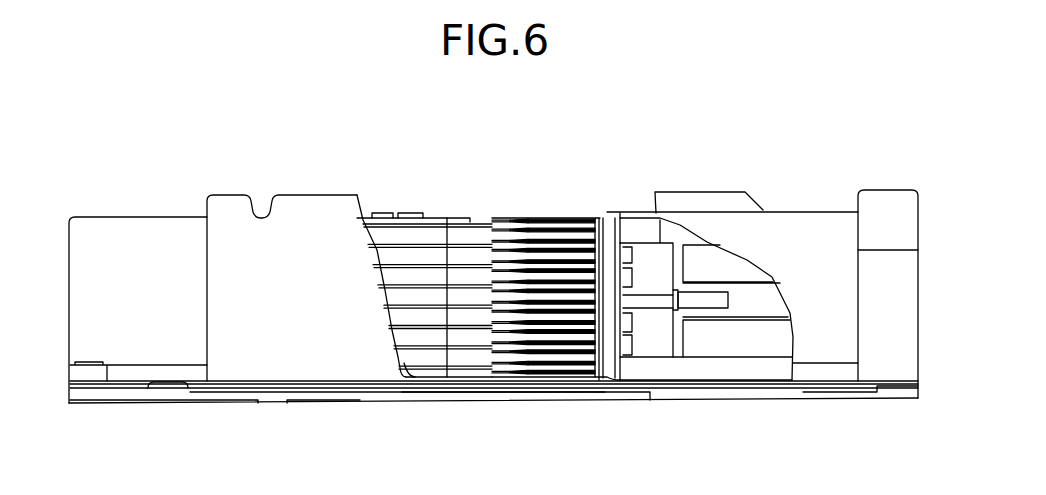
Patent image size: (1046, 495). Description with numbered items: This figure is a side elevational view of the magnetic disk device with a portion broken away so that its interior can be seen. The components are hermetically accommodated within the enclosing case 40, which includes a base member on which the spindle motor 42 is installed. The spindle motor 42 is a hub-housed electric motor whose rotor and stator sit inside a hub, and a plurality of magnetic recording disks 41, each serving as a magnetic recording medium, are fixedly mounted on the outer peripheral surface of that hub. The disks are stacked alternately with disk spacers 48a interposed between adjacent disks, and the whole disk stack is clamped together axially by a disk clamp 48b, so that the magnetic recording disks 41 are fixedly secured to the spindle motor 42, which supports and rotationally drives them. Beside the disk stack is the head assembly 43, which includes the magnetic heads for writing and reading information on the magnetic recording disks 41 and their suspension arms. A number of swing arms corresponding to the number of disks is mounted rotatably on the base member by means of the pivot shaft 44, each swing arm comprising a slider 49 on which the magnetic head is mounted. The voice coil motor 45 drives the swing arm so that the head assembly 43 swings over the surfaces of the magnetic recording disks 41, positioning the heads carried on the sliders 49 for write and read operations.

The enclosing case 40 is at (300, 235).
The magnetic recording disk 41 is at (467, 360).
The spindle motor 42 is at (423, 363).
The head assembly 43 is at (570, 218).
The pivot shaft 44 is at (646, 214).
The voice coil motor 45 is at (748, 297).
The disk spacer 48a is at (432, 262).
The disk clamp 48b is at (383, 218).
The slider 49 is at (502, 220).